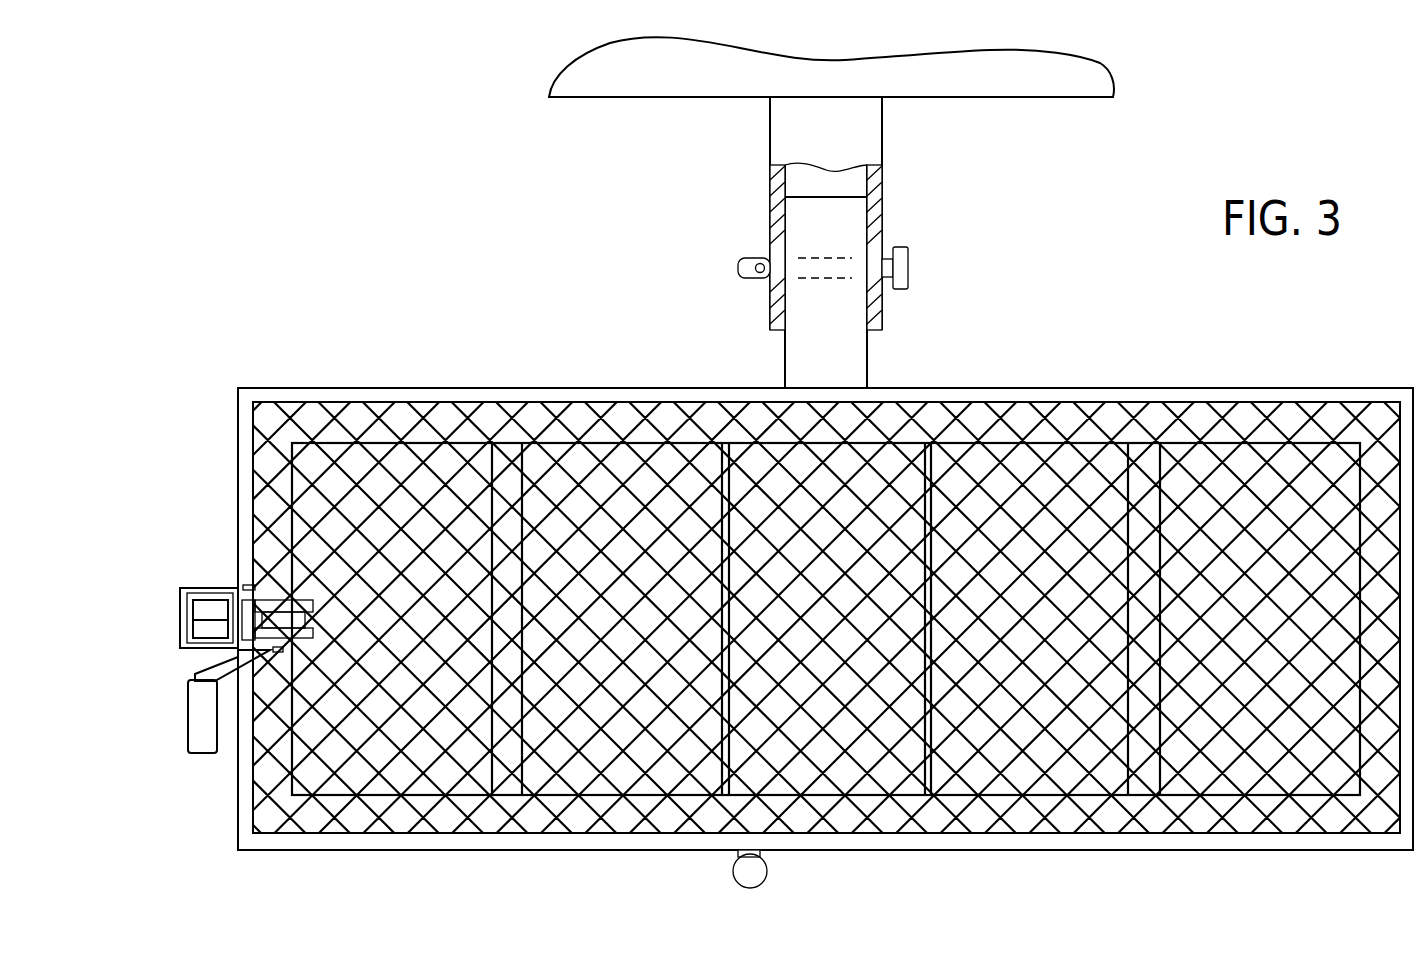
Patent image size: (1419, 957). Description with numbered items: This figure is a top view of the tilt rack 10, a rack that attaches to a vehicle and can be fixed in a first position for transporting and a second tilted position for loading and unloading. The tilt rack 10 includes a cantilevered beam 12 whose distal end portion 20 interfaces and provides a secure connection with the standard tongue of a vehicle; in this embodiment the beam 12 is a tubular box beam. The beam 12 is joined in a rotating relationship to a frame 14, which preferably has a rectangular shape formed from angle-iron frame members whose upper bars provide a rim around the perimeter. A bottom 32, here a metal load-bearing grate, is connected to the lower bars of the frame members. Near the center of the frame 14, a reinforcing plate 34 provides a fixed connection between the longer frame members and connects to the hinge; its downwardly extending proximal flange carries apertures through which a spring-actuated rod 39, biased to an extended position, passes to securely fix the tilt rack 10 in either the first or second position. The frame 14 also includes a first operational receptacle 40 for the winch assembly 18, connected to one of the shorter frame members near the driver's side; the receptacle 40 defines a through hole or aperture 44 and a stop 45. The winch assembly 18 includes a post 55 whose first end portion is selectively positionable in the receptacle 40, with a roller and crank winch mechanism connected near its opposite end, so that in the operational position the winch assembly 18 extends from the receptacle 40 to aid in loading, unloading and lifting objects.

The tilt rack 10 is at (440, 260).
The beam 12 is at (870, 357).
The frame 14 is at (1365, 388).
The winch assembly 18 is at (203, 755).
The distal end portion 20 is at (797, 222).
The bottom 32 is at (1062, 468).
The reinforcing plate 34 is at (757, 467).
The spring-actuated rod 39 is at (727, 888).
The first operational receptacle 40 is at (172, 607).
The aperture 44 is at (183, 655).
The stop 45 is at (222, 605).
The post 55 is at (213, 630).